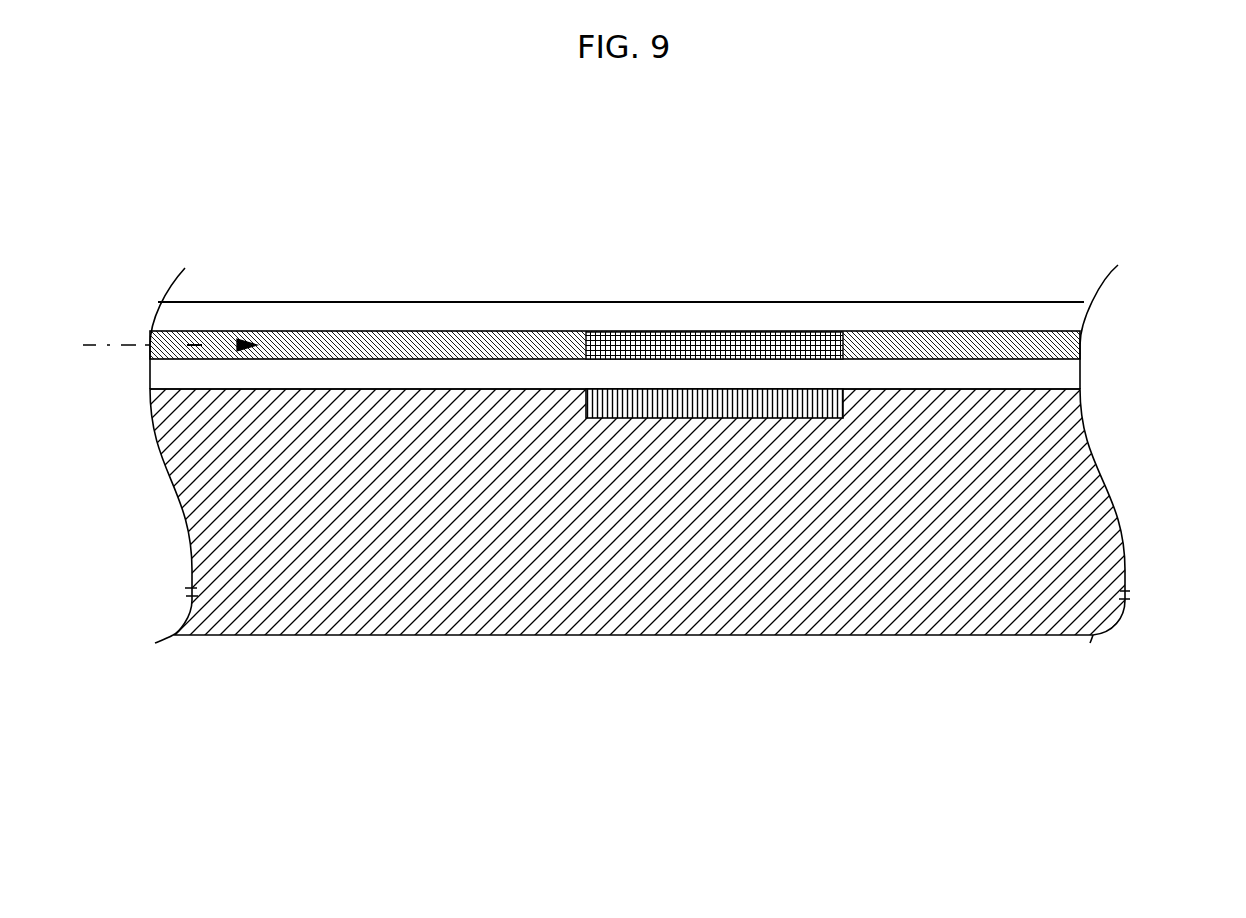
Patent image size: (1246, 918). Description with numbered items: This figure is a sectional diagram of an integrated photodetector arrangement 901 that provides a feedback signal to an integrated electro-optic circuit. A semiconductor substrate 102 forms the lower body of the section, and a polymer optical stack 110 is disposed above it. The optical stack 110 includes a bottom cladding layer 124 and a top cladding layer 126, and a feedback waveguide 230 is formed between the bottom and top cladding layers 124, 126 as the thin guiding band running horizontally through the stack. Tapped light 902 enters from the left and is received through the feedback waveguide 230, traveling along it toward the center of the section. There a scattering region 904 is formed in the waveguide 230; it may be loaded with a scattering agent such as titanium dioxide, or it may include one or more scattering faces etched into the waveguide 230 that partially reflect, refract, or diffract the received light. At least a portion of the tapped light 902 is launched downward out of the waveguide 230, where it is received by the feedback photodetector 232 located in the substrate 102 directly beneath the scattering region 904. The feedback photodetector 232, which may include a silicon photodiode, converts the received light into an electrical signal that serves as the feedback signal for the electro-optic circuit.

The photonic device assembly 901 is at (920, 96).
The tapped light 902 is at (118, 342).
The scattering region 904 is at (787, 332).
The polymer optical stack 110 is at (1103, 388).
The semiconductor substrate 102 is at (1143, 388).
The top cladding layer 126 is at (307, 302).
The bottom cladding layer 124 is at (305, 390).
The feedback waveguide 230 is at (413, 360).
The feedback photodetector 232 is at (740, 418).